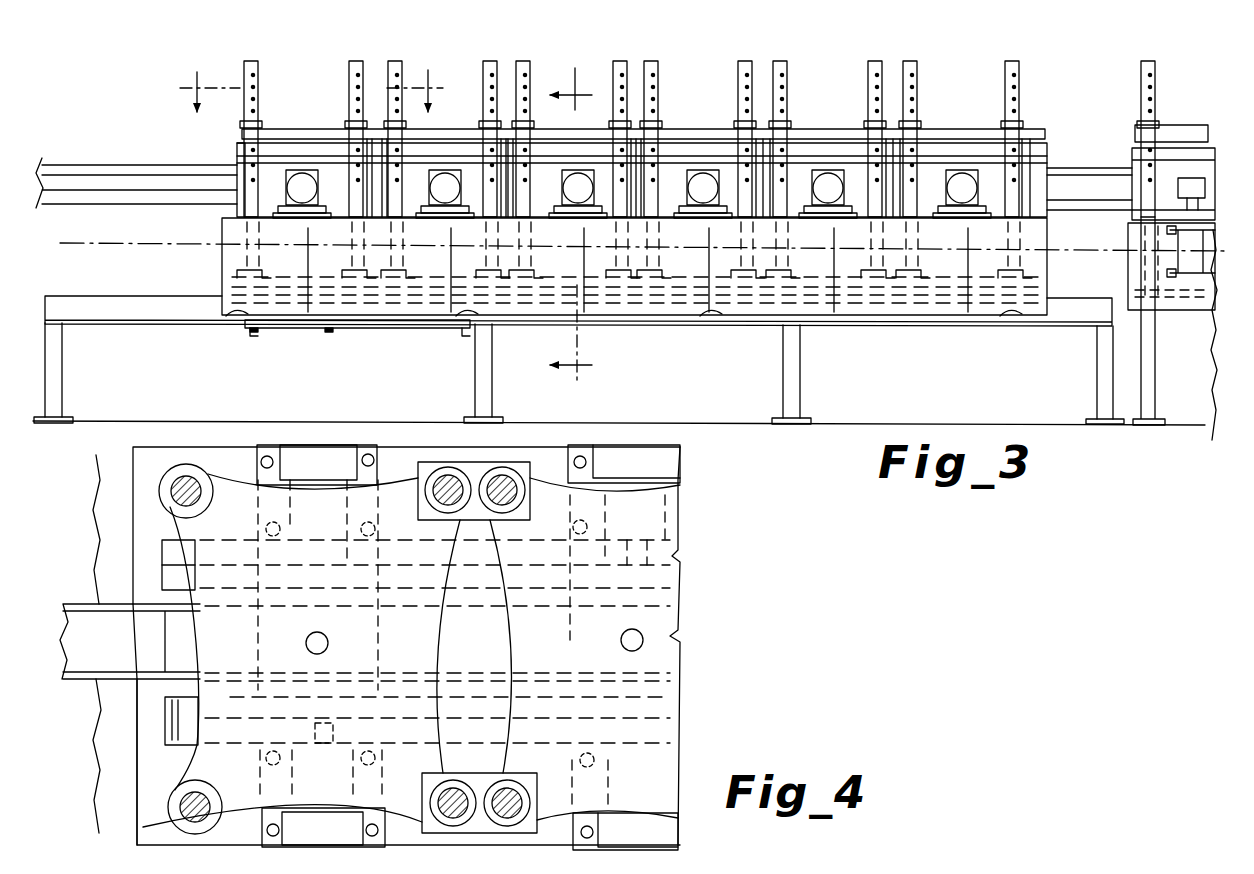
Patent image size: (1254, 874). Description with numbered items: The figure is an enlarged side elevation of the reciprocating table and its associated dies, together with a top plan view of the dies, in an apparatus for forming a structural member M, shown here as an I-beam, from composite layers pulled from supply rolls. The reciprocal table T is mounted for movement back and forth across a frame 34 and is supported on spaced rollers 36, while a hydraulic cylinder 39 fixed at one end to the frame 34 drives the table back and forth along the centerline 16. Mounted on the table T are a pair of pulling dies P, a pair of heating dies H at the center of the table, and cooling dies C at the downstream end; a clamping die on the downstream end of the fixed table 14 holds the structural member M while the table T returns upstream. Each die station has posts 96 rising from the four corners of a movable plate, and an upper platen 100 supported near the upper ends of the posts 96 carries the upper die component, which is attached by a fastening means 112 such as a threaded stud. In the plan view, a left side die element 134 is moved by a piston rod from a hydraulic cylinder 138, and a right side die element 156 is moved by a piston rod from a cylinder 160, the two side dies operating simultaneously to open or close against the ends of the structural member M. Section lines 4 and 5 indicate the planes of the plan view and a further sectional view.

In FIG. 3, the posts 96 is at (262, 76).
In FIG. 4, the posts 96 is at (178, 478).
In FIG. 3, the centerline 16 is at (108, 247).
In FIG. 3, the frame 34 is at (96, 330).
In FIG. 3, the spaced rollers 36 is at (222, 330).
In FIG. 3, the hydraulic cylinder 39 is at (345, 330).
In FIG. 3, the fixed table 14 is at (1170, 310).
In FIG. 4, the hydraulic cylinder 138 is at (303, 501).
In FIG. 4, the cylinder 160 is at (333, 762).
In FIG. 4, the left side die element 134 is at (150, 572).
In FIG. 4, the right side die element 156 is at (157, 722).
In FIG. 4, the fastening means 112 is at (305, 642).
In FIG. 4, the upper platen 100 is at (650, 752).
In FIG. 3, the cooling dies C is at (331, 114).
In FIG. 4, the cooling dies C is at (126, 522).
In FIG. 3, the structural member M is at (116, 158).
In FIG. 4, the structural member M is at (82, 690).
In FIG. 3, the reciprocal table T is at (220, 232).
In FIG. 4, the reciprocal table T is at (132, 768).
In FIG. 3, the heating dies H is at (590, 110).
In FIG. 3, the pulling dies P is at (828, 113).
In FIG. 3, the section line 4- 4 is at (308, 103).
In FIG. 3, the section line 5- 5 is at (568, 233).